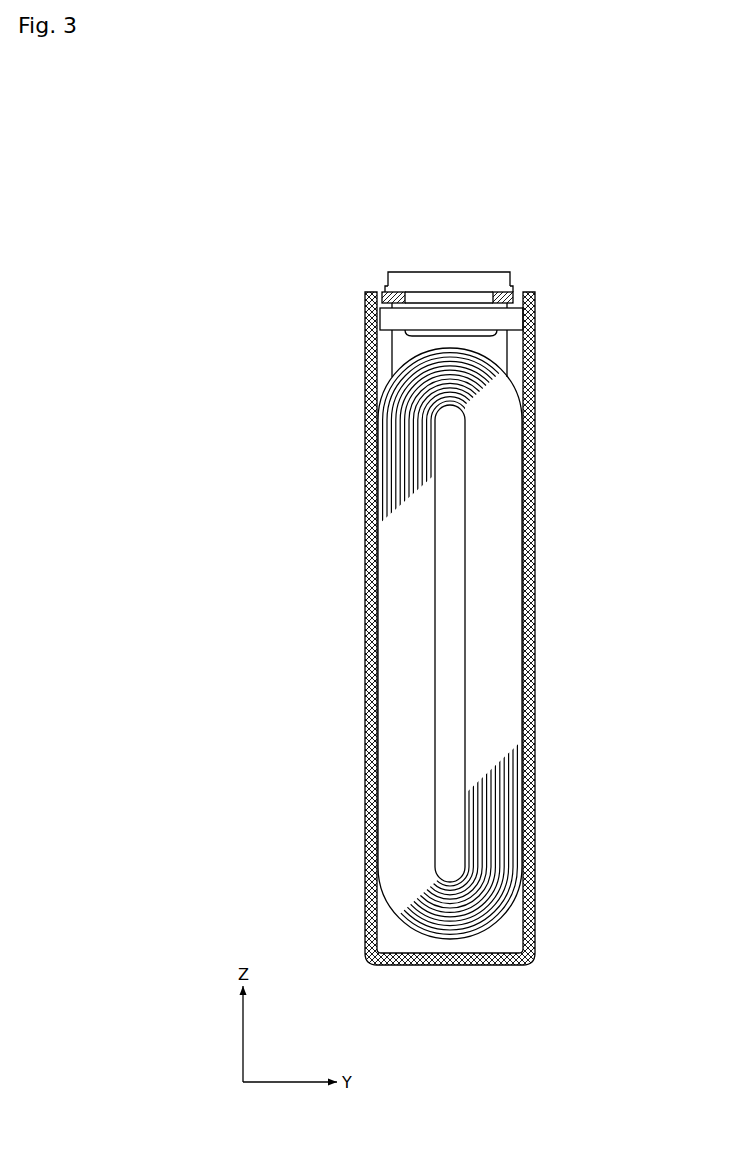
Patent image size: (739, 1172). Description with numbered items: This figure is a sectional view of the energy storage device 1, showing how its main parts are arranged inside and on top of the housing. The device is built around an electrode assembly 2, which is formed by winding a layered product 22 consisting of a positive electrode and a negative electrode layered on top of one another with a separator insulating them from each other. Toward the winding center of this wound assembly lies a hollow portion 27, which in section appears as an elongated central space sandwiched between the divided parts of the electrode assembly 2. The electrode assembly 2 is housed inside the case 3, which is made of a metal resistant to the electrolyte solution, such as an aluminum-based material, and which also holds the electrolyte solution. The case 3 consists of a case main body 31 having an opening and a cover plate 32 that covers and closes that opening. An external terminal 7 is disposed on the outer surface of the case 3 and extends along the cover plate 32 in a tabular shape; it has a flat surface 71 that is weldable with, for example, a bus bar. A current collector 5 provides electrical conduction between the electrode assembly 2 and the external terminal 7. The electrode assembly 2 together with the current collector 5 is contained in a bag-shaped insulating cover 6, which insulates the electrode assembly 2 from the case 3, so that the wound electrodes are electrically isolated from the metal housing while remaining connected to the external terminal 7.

The energy storage device 1 is at (574, 177).
The electrode assembly 2 is at (496, 640).
The layered product 22 is at (500, 368).
The hollow portion 27 is at (450, 660).
The case 3 is at (243, 282).
The case main body 31 is at (364, 342).
The cover plate 32 is at (372, 287).
The current collector 5 is at (390, 362).
The insulating cover 6 is at (380, 930).
The external terminal 7 is at (441, 270).
The surface 71 is at (463, 271).